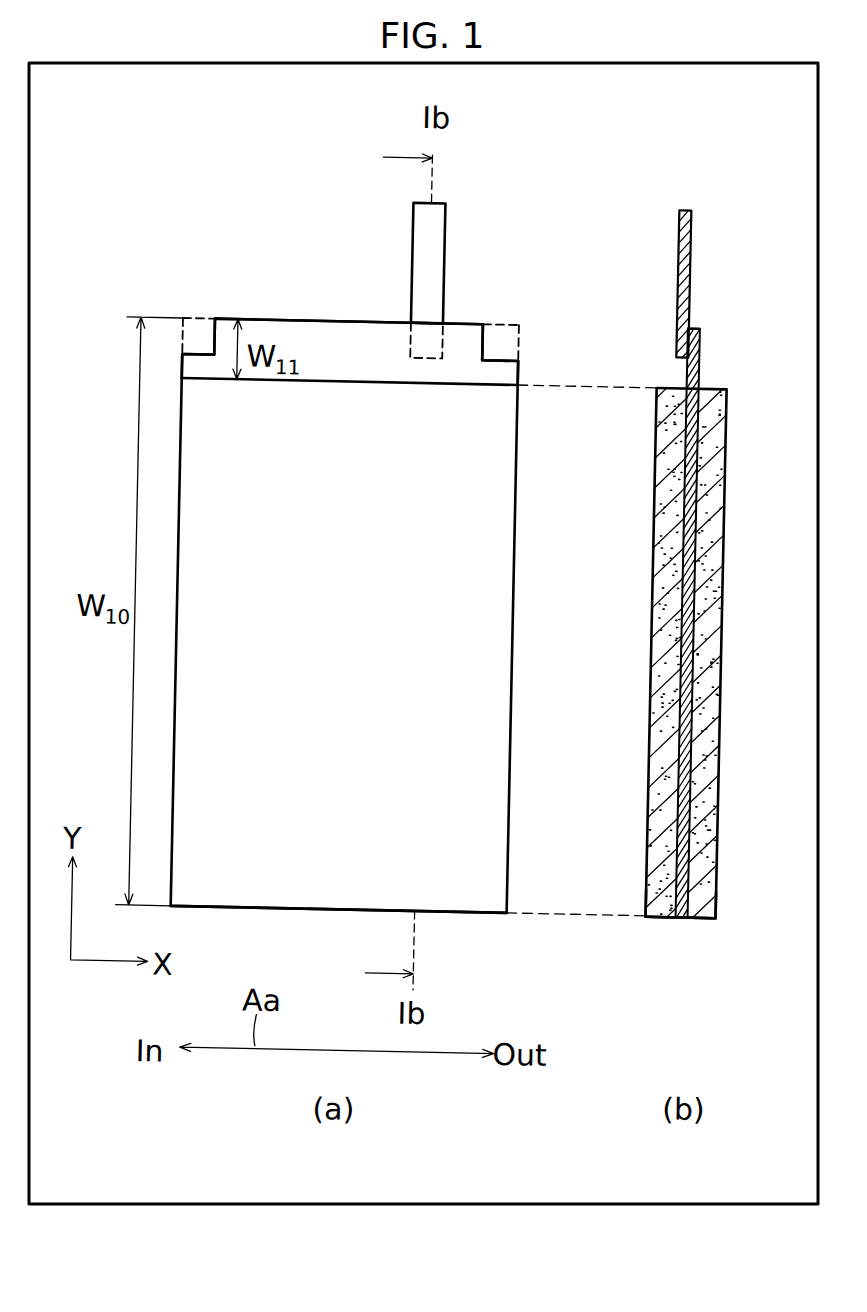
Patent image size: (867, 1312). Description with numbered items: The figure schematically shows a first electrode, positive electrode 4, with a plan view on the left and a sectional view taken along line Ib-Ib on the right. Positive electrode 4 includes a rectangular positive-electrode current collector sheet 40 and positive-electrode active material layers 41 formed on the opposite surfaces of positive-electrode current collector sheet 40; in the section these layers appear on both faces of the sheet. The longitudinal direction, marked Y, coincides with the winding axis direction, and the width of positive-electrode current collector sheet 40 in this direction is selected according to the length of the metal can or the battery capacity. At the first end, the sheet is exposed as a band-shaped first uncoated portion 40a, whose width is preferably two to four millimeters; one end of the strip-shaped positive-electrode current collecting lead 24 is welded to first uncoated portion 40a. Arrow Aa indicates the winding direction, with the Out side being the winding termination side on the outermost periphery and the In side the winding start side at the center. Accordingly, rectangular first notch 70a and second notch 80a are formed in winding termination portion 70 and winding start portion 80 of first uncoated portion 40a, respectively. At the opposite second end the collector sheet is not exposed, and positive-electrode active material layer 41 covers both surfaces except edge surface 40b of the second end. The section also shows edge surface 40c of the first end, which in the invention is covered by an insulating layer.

The positive electrode 4 is at (224, 183).
The positive-electrode current collecting lead 24 is at (422, 228).
The positive-electrode current collector sheet 40 is at (689, 652).
The first uncoated portion 40a is at (330, 336).
The edge surface of the second end 40b is at (695, 921).
The edge surface of the first end 40c is at (706, 311).
The positive-electrode active material layer 41 is at (325, 879).
The winding termination portion 70 is at (533, 369).
The first notch 70a is at (490, 340).
The winding start portion 80 is at (179, 356).
The second notch 80a is at (203, 332).